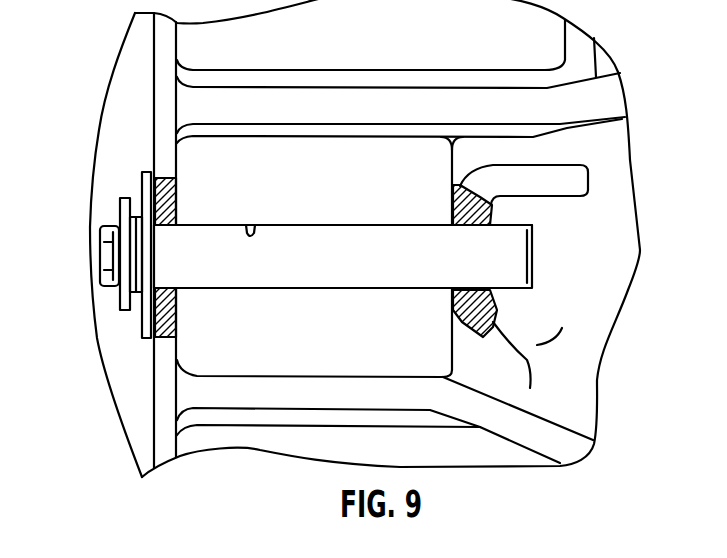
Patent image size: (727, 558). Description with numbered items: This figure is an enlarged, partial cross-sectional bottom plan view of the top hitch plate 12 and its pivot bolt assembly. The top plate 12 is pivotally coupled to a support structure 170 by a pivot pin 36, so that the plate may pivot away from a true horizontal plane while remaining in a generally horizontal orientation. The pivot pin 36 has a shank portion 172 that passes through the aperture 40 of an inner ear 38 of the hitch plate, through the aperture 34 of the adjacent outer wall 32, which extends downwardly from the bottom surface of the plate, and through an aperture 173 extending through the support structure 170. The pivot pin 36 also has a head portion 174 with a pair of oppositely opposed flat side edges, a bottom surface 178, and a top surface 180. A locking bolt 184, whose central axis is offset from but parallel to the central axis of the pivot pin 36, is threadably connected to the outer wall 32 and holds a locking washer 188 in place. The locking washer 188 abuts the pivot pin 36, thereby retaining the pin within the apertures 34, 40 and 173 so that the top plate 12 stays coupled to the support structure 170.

The top hitch plate 12 is at (99, 76).
The outer wall 32 is at (153, 143).
The aperture 34 is at (177, 205).
The pivot pin 36 is at (318, 208).
The inner ear 38 is at (560, 198).
The aperture 40 is at (490, 312).
The support structure 170 is at (193, 348).
The shank portion 172 is at (359, 225).
The aperture 173 is at (248, 224).
The head portion 174 is at (143, 188).
The bottom surface 178 is at (167, 300).
The top surface 180 is at (160, 297).
The locking bolt 184 is at (100, 232).
The locking washer 188 is at (120, 205).